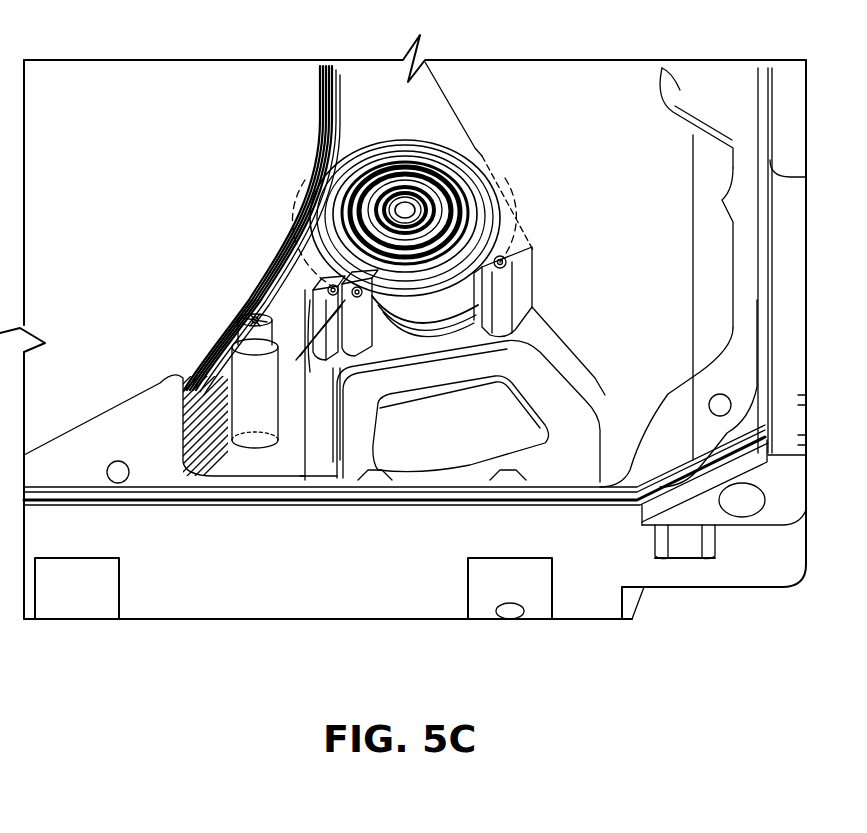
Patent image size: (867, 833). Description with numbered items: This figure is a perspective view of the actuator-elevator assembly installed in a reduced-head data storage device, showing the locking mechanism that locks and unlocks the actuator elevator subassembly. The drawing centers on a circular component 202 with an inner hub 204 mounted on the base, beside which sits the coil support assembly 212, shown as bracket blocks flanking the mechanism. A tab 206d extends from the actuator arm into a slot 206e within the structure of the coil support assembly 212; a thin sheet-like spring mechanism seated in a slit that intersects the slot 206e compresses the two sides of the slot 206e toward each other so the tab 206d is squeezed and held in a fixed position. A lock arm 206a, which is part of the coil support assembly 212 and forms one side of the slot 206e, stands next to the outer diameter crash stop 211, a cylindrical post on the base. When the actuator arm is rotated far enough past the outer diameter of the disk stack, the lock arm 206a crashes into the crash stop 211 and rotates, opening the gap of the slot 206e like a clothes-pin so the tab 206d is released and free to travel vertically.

The motor 202 is at (410, 160).
The motor rotor / hub 204 is at (391, 187).
The lock arm 206a is at (303, 353).
The tab 206d is at (344, 282).
The slot 206e is at (337, 362).
The outer diameter crash stop 211 is at (250, 330).
The coil support assembly 212 is at (527, 283).